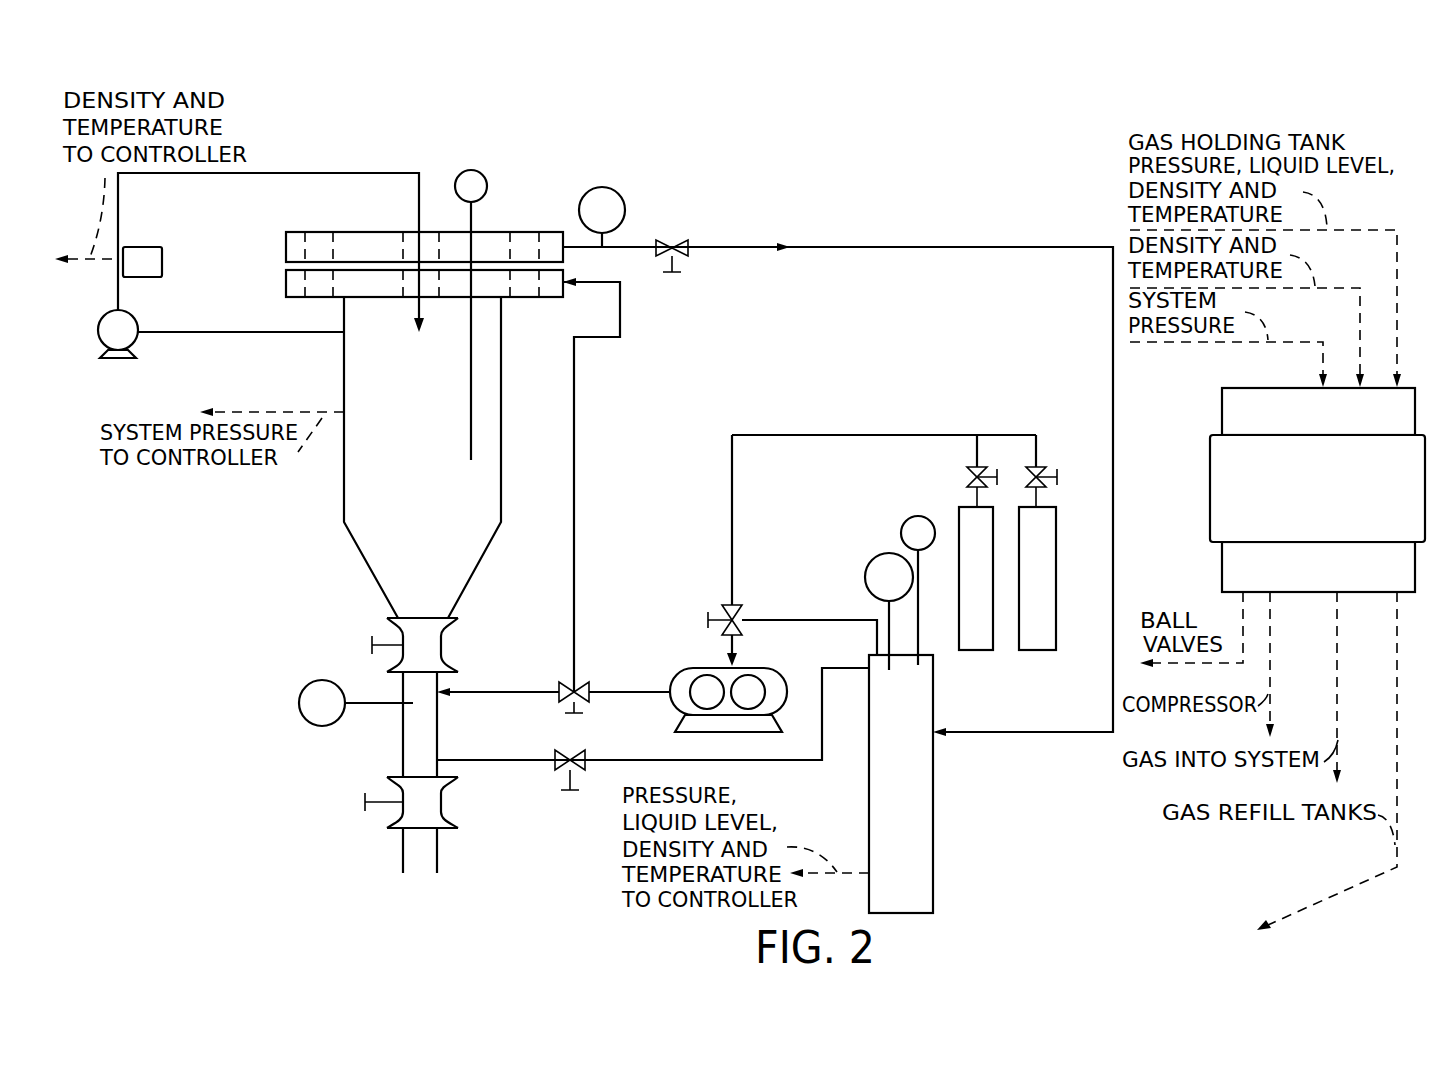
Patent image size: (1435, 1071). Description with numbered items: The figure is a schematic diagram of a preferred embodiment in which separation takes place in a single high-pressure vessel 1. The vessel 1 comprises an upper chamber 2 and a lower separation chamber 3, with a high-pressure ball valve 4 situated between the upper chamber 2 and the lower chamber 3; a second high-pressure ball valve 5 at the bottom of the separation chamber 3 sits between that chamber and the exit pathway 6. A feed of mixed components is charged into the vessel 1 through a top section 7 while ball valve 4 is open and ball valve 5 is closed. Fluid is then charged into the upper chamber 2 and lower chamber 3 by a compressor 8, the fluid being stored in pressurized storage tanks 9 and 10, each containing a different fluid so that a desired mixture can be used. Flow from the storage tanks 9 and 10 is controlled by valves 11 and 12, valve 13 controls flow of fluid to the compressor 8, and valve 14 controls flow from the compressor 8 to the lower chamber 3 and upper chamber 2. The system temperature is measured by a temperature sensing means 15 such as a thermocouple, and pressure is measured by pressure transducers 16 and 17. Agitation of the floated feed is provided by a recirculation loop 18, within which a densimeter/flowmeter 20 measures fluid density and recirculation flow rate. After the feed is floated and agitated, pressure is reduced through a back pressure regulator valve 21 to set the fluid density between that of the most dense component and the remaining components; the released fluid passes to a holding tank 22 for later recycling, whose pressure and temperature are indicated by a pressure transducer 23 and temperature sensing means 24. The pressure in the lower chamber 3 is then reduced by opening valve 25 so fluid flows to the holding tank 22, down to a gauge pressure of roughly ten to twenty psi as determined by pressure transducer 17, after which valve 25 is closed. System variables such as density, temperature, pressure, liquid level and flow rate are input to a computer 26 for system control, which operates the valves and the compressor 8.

The high-pressure vessel 1 is at (303, 571).
The upper chamber 2 is at (344, 488).
The lower separation chamber 3 is at (403, 745).
The high-pressure ball valve 4 is at (441, 640).
The second high-pressure ball valve 5 is at (441, 800).
The exit pathway 6 is at (437, 858).
The top section 7 is at (525, 232).
The compressor 8 is at (99, 346).
The pressurized storage tank 9 is at (976, 650).
The pressurized storage tank 10 is at (1037, 650).
The valve 11 is at (980, 467).
The valve 12 is at (1040, 467).
The valve 13 is at (735, 605).
The valve 14 is at (576, 680).
The temperature sensing means 15 is at (475, 170).
The pressure transducer 16 is at (620, 197).
The pressure transducer 17 is at (300, 712).
The recirculation loop 18 is at (378, 173).
The densimeter/flowmeter 20 is at (148, 247).
The back pressure regulator valve 21 is at (672, 240).
The holding tank 22 is at (933, 803).
The pressure transducer 23 is at (872, 561).
The temperature sensing means 24 is at (906, 519).
The valve 25 is at (590, 775).
The computer 26 is at (1210, 475).